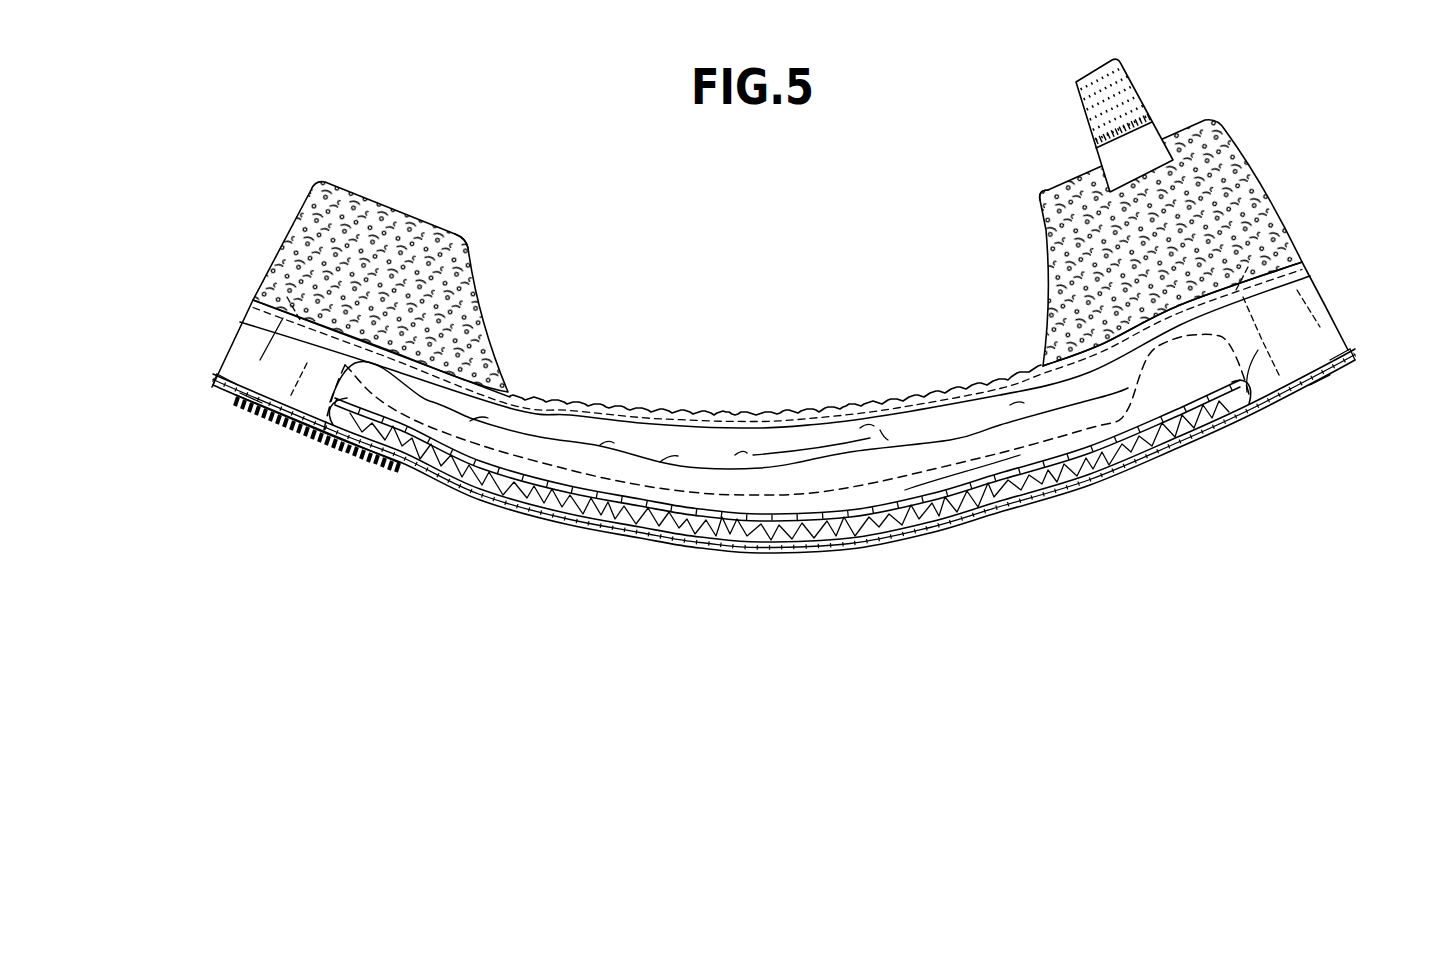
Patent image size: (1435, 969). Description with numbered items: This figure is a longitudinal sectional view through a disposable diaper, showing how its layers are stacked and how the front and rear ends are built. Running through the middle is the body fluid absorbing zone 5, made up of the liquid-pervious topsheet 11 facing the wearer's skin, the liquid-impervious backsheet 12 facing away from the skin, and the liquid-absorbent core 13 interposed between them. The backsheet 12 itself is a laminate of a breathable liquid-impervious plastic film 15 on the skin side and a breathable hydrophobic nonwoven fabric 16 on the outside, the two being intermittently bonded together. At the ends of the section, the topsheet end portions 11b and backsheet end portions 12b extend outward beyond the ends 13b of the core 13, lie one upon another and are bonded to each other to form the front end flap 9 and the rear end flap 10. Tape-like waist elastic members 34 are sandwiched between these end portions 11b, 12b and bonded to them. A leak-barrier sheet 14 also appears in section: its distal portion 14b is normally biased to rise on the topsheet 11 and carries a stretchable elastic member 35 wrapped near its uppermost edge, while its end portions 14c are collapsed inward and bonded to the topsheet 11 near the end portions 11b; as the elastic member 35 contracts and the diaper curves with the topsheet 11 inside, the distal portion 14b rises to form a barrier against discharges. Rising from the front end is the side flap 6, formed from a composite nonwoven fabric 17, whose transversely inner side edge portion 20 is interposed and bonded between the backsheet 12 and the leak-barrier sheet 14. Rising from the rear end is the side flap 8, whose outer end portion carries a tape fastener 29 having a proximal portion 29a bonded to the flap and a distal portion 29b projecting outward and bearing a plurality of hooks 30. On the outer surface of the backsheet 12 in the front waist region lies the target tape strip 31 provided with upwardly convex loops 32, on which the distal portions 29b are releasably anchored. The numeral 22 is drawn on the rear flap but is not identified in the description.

The body fluid absorbing zone 5 is at (787, 500).
The side flap 6 is at (322, 181).
The side flap 8 is at (1217, 121).
The end flap 9 is at (313, 380).
The end flap 10 is at (1258, 350).
The liquid-pervious topsheet 11 is at (905, 490).
The end portion of topsheet 11b is at (236, 394).
The liquid-impervious backsheet 12 is at (1005, 505).
The end portion of backsheet 12b is at (268, 410).
The liquid-absorbent core 13 is at (935, 508).
The end of core 13b is at (326, 422).
The leak-barrier sheet 14 is at (670, 443).
The distal portion of leak-barrier sheet 14b is at (753, 443).
The end portion of leak-barrier sheet 14c is at (262, 318).
The plastic film 15 is at (838, 535).
The nonwoven fabric 16 is at (748, 548).
The composite nonwoven fabric 17 is at (462, 240).
The inner side edge portion of side flap 20 is at (287, 297).
The waist edge 22 is at (1040, 195).
The tape fastener 29 is at (1119, 58).
The proximal portion of tape fastener 29a is at (1105, 156).
The distal portion of tape fastener 29b is at (1095, 74).
The hooks 30 is at (1128, 100).
The target tape strip 31 is at (404, 482).
The loops 32 is at (376, 476).
The waist elastic member 34 is at (243, 370).
The elastic member 35 is at (791, 407).